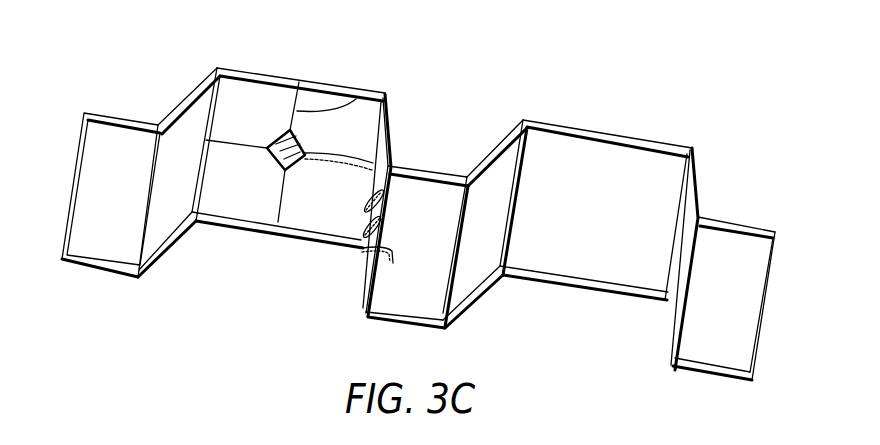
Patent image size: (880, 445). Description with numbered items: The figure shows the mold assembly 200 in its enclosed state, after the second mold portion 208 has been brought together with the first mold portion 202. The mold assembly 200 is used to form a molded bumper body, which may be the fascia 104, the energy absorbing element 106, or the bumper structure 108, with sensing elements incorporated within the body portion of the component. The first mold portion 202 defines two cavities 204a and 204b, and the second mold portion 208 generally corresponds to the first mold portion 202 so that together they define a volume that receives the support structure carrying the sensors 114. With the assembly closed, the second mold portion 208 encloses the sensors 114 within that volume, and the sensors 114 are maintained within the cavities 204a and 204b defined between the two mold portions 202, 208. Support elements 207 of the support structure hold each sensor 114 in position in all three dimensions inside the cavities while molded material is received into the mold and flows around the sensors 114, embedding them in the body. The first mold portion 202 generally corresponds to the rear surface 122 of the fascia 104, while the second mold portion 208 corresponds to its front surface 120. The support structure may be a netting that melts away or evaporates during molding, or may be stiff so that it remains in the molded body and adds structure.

The mold assembly 200 is at (144, 59).
The first mold portion 202 is at (243, 72).
The cavity 204a is at (330, 84).
The cavity 204b is at (563, 127).
The support element 207 is at (356, 99).
The second mold portion 208 is at (282, 82).
The sensor 114 is at (280, 168).
The fascia 104 is at (608, 140).
The energy absorbing element 106 is at (607, 213).
The bumper structure 108 is at (680, 257).
The rear surface 122 is at (637, 135).
The front surface 120 is at (683, 147).